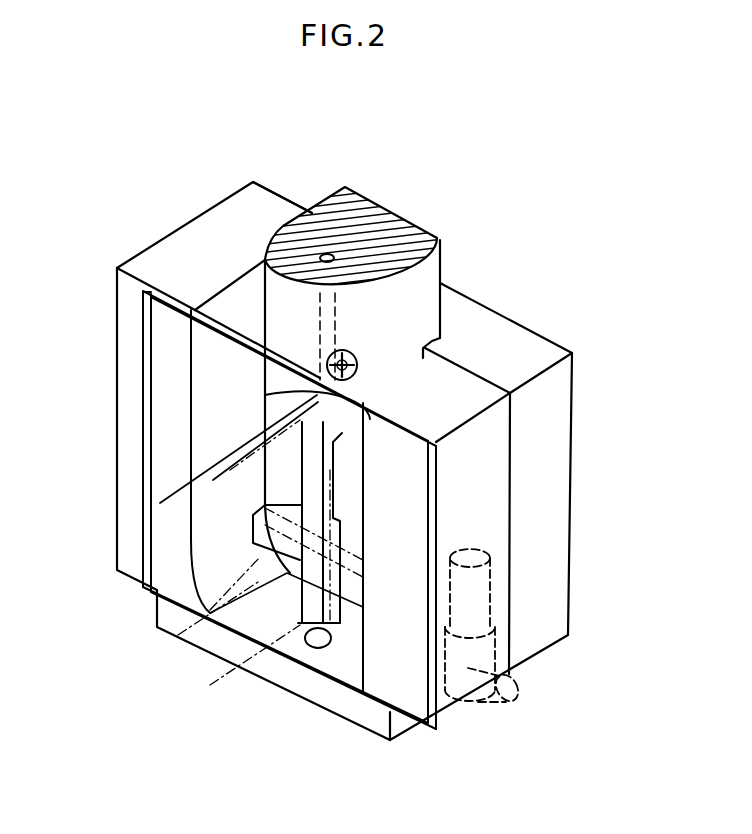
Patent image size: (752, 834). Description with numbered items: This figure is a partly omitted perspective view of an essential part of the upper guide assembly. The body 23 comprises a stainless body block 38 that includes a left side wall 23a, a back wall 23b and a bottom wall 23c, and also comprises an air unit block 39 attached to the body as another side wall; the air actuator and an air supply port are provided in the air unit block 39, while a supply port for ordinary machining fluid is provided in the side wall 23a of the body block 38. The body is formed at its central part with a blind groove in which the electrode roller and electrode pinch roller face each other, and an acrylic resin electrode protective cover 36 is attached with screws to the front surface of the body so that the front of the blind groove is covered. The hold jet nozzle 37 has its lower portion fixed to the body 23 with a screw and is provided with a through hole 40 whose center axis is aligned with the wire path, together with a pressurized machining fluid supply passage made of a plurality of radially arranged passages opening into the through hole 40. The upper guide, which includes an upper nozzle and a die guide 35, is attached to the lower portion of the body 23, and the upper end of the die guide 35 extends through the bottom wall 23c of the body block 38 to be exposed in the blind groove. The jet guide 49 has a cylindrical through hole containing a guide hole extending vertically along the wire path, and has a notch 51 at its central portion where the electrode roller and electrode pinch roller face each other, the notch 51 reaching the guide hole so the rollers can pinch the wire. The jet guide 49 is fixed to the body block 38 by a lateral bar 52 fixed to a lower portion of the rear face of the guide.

The body 23 is at (197, 213).
The left side wall 23a is at (225, 218).
The back wall 23b is at (480, 315).
The bottom wall 23c is at (370, 718).
The die guide 35 is at (307, 652).
The electrode protective cover 36 is at (160, 347).
The hold jet nozzle 37 is at (418, 283).
The body block 38 is at (267, 203).
The air unit block 39 is at (488, 482).
The through hole 40 is at (328, 257).
The jet guide 49 is at (235, 667).
The notch 51 is at (350, 473).
The lateral bar 52 is at (178, 635).